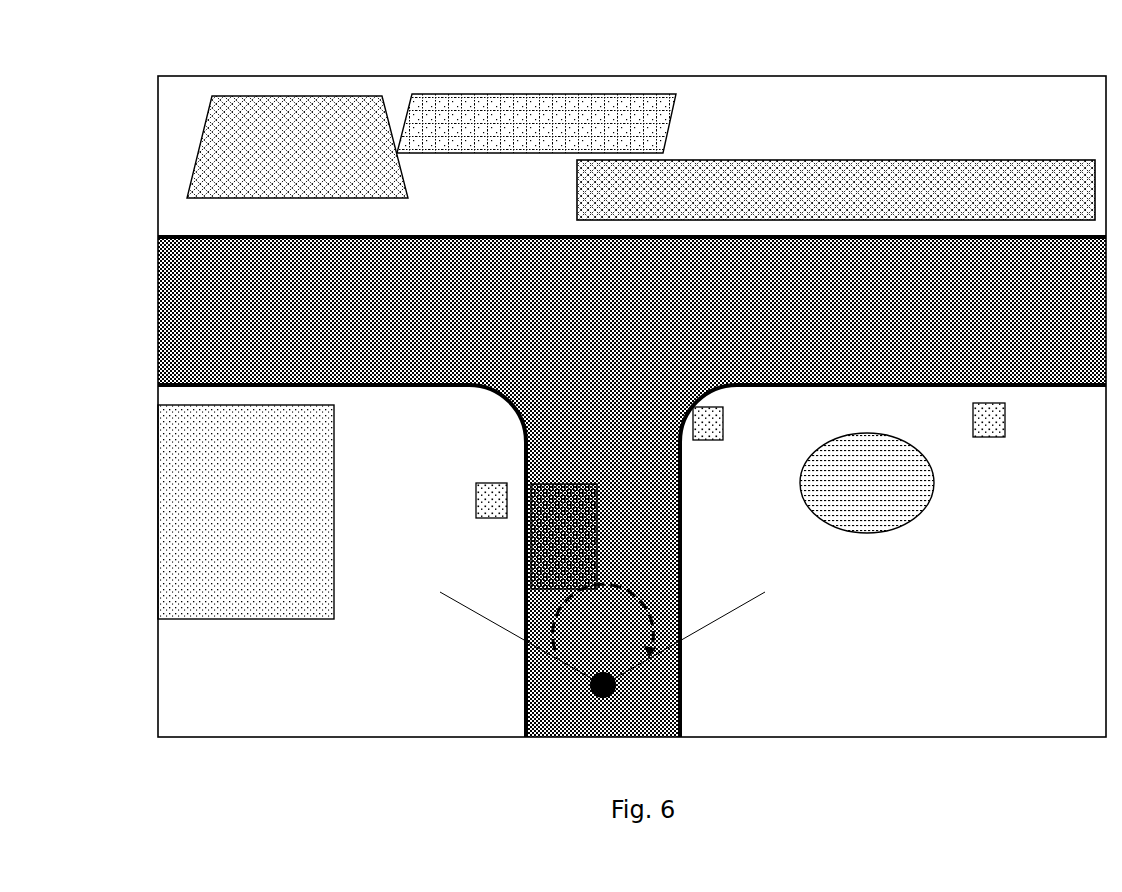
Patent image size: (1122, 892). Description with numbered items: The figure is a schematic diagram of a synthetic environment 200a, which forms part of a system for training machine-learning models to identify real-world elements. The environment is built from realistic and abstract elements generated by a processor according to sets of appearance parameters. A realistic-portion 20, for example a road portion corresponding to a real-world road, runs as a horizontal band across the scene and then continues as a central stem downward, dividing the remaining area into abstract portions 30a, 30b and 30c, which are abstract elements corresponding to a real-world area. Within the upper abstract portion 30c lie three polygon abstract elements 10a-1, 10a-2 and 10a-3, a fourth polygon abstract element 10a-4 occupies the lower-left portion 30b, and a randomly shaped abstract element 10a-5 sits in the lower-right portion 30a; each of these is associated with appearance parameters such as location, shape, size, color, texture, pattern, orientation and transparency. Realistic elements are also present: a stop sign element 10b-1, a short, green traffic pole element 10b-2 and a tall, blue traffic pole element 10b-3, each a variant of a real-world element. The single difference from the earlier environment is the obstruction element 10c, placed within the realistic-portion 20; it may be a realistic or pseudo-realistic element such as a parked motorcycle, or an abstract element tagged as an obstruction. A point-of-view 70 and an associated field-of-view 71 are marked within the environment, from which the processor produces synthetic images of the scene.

The synthetic environment 200a is at (158, 100).
The realistic-portion 20 is at (632, 487).
The abstract portion 30a is at (893, 561).
The abstract portion 30b is at (342, 561).
The abstract portion 30c is at (632, 156).
The polygon abstract element 10a-1 is at (297, 147).
The polygon abstract element 10a-2 is at (536, 123).
The polygon abstract element 10a-3 is at (836, 190).
The polygon abstract element 10a-4 is at (246, 512).
The randomly shaped abstract element 10a-5 is at (867, 483).
The stop sign element 10b-1 is at (476, 499).
The traffic pole element 10b-2 is at (723, 421).
The traffic pole element 10b-3 is at (1005, 418).
The obstruction element 10c is at (564, 536).
The point-of-view 70 is at (590, 686).
The field-of-view 71 is at (601, 616).